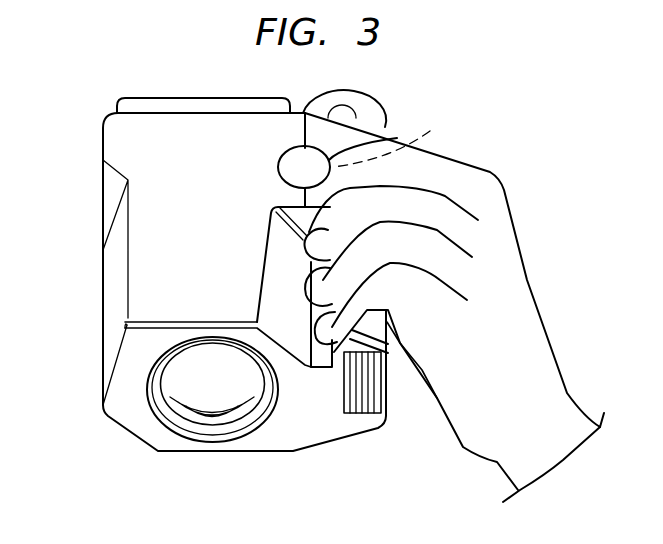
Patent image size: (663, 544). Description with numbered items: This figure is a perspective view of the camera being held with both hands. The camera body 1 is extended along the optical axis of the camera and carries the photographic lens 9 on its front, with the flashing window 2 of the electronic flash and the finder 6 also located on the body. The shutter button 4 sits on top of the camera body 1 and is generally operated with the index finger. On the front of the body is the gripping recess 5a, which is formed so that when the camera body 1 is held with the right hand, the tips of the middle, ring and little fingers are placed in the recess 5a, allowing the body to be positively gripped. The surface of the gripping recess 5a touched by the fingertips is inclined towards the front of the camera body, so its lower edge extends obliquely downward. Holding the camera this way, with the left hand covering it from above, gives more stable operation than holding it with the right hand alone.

The camera body 1 is at (102, 282).
The flashing window 2 is at (365, 414).
The shutter button 4 is at (441, 307).
The gripping recess 5a is at (320, 362).
The finder 6 is at (380, 103).
The photographic lens 9 is at (211, 407).